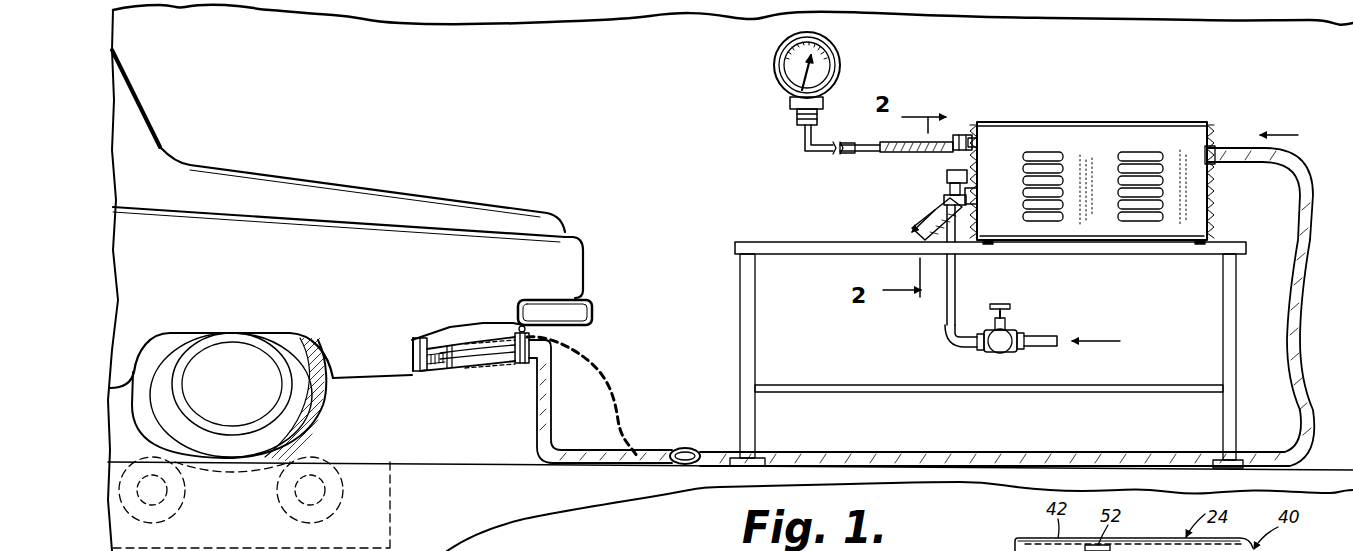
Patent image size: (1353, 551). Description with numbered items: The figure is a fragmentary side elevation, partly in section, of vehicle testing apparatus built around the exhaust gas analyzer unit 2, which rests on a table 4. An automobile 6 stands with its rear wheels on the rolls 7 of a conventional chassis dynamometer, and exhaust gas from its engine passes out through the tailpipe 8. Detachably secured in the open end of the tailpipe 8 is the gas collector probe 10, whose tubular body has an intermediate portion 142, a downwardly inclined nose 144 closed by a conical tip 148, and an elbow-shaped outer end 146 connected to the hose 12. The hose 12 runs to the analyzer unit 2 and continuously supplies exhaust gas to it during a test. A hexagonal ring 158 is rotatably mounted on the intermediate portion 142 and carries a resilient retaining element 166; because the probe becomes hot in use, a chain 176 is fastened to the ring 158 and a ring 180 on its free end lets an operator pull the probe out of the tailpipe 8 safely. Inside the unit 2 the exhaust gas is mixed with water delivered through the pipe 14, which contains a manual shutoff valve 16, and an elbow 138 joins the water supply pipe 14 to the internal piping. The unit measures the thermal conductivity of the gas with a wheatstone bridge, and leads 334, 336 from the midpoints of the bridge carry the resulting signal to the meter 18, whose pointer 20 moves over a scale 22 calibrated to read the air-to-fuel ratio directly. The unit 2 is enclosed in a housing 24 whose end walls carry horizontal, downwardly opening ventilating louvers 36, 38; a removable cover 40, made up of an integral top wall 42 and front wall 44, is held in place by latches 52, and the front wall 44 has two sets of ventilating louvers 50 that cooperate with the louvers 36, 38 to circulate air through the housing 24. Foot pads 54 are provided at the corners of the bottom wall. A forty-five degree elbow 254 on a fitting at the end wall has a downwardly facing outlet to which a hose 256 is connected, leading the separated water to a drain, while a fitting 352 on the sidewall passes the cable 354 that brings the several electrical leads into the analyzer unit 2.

The exhaust gas analyzer unit 2 is at (1138, 110).
The table 4 is at (768, 241).
The automobile 6 is at (437, 205).
The rolls 7 is at (142, 453).
The tailpipe 8 is at (421, 374).
The gas collector probe 10 is at (497, 360).
The hose 12 is at (1308, 270).
The pipe 14 is at (945, 300).
The manual shutoff valve 16 is at (996, 342).
The meter 18 is at (838, 58).
The pointer 20 is at (800, 64).
The scale 22 is at (812, 87).
The housing 24 is at (1067, 120).
The ventilating louvers 36 is at (972, 157).
The ventilating louvers 38 is at (1214, 188).
The cover 40 is at (1031, 140).
The top wall 42 is at (1113, 122).
The front wall 44 is at (1092, 240).
The ventilating louvers 50 is at (1120, 158).
The latches 52 is at (975, 125).
The foot pads 54 is at (988, 244).
The elbow 138 is at (947, 176).
The intermediate portion 142 is at (473, 368).
The nose 144 is at (450, 347).
The elbow-shaped outer end 146 is at (545, 352).
The conical tip 148 is at (413, 341).
The ring 158 is at (527, 365).
The resilient retaining element 166 is at (483, 336).
The chain 176 is at (605, 395).
The ring 180 is at (688, 447).
The 45° elbow 254 is at (972, 200).
The hose 256 is at (920, 225).
The lead 334 is at (803, 138).
The lead 336 is at (840, 143).
The fitting 352 is at (957, 135).
The cable 354 is at (885, 152).